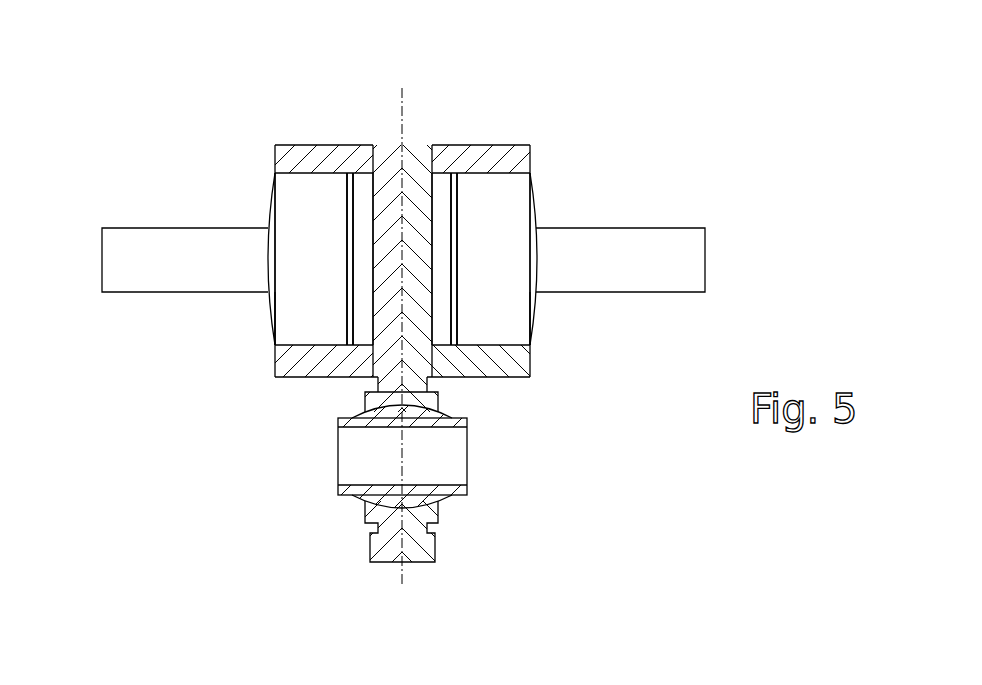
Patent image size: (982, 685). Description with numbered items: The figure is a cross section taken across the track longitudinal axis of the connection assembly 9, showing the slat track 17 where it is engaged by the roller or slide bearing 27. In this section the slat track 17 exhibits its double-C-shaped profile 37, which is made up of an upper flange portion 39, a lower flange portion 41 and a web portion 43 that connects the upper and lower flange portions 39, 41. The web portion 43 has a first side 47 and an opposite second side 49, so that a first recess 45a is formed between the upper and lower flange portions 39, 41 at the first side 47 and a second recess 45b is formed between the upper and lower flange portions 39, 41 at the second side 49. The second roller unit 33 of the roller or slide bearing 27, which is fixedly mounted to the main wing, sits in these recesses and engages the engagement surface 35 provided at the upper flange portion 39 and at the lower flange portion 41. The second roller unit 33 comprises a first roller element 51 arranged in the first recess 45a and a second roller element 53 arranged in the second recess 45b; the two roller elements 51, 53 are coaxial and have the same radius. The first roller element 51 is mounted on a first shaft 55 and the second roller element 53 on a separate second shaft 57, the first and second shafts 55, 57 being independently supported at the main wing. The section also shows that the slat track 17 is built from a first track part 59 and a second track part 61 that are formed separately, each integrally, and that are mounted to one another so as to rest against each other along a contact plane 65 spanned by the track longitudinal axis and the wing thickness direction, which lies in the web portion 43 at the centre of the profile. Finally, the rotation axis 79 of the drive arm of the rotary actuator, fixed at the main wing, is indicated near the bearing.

The connection assembly 9 is at (597, 94).
The slat track 17 is at (470, 162).
The roller or slide bearing 27 is at (384, 257).
The second roller unit 33 is at (407, 264).
The engagement surface 35 is at (402, 264).
The double-C-shaped profile 37 is at (480, 469).
The upper flange portion 39 is at (342, 160).
The lower flange portion 41 is at (320, 377).
The web portion 43 is at (373, 277).
The first recess 45a is at (360, 197).
The second recess 45b is at (443, 192).
The first side 47 is at (373, 317).
The second side 49 is at (432, 318).
The first roller element 51 is at (297, 249).
The second roller element 53 is at (487, 249).
The first shaft 55 is at (131, 272).
The second shaft 57 is at (688, 272).
The first track part 59 is at (283, 158).
The second track part 61 is at (530, 150).
The contact plane 65 is at (402, 90).
The rotation axis 79 is at (266, 345).